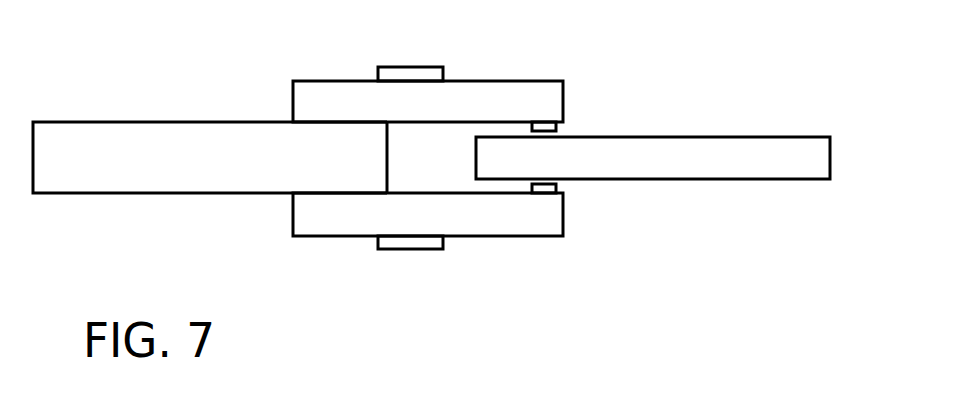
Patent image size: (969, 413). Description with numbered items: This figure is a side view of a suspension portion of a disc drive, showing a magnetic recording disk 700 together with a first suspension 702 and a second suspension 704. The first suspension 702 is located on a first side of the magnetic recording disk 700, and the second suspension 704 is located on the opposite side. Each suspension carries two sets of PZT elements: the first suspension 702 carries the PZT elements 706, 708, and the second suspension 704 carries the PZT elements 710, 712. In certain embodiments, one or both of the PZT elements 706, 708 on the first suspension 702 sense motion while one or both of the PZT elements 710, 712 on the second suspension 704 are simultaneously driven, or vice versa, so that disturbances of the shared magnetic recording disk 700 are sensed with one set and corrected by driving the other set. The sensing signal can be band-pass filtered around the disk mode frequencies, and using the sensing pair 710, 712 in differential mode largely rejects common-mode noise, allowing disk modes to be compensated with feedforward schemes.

The magnetic recording disk 700 is at (723, 137).
The first suspension 702 is at (517, 80).
The second suspension 704 is at (538, 236).
The PZT element 706 is at (409, 66).
The PZT element 708 is at (558, 126).
The PZT element 710 is at (399, 250).
The PZT element 712 is at (557, 188).